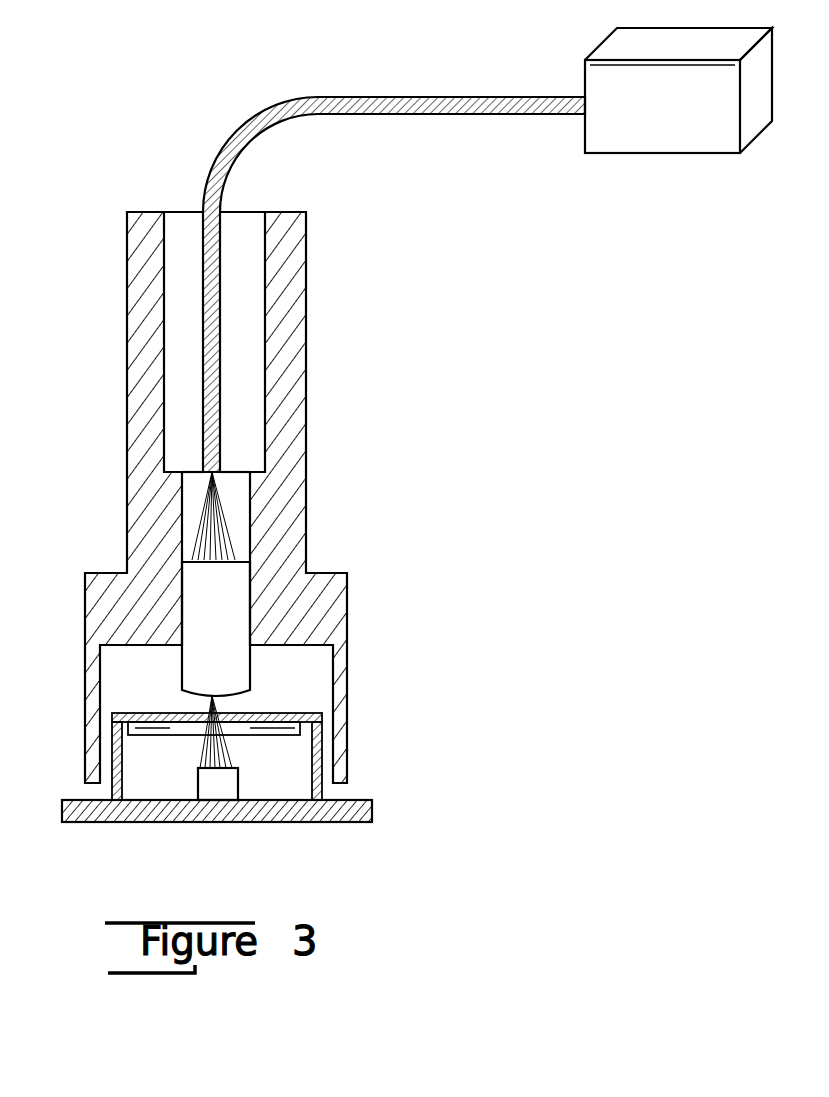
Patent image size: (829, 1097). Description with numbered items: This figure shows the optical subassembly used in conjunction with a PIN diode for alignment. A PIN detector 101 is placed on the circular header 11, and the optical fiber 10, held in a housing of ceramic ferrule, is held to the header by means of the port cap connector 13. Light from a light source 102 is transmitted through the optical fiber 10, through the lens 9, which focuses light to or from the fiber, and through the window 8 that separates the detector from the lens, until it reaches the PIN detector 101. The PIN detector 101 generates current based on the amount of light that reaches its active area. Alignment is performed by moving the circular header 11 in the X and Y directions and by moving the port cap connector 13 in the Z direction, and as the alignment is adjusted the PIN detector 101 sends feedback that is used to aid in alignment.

The port cap connector 13 is at (303, 318).
The optical fiber 10 is at (225, 165).
The light source 102 is at (657, 153).
The lens 9 is at (185, 685).
The window 8 is at (258, 713).
The PIN detector 101 is at (238, 785).
The circular header 11 is at (372, 815).